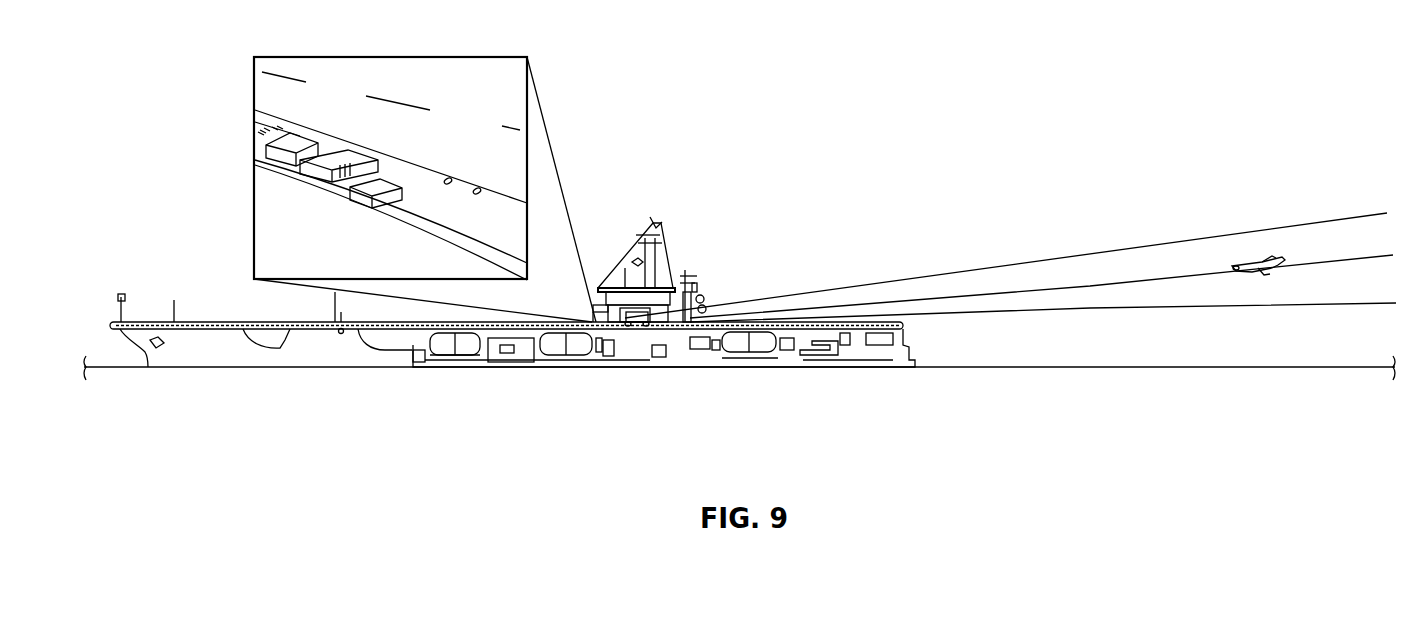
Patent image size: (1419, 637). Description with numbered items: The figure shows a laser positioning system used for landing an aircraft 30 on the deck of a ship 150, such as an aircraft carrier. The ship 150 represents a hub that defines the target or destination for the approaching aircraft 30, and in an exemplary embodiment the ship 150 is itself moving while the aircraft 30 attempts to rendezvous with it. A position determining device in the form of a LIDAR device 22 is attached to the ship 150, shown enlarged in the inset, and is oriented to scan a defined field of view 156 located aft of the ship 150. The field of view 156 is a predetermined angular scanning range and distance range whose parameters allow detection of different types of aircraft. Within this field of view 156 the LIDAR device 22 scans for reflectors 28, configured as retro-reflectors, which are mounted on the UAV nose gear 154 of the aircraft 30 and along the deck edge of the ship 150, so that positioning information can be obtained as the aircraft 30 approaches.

The LIDAR device 22 is at (293, 142).
The reflectors 28 is at (452, 180).
The aircraft 30 is at (1262, 255).
The ship 150 is at (862, 366).
The UAV nose gear 154 is at (1235, 252).
The field of view 156 is at (1368, 296).